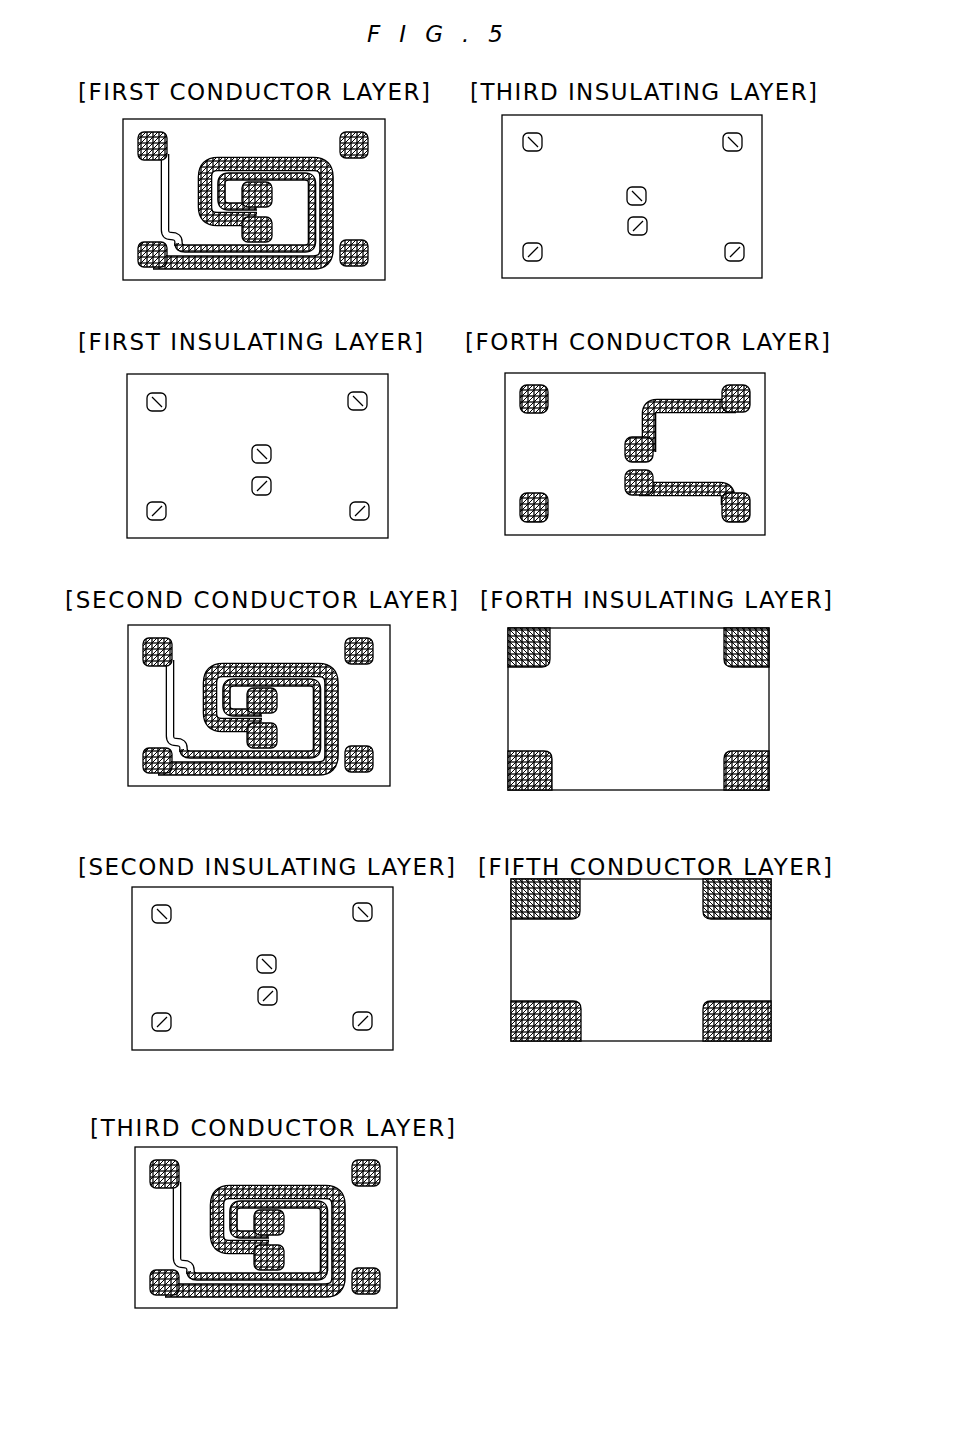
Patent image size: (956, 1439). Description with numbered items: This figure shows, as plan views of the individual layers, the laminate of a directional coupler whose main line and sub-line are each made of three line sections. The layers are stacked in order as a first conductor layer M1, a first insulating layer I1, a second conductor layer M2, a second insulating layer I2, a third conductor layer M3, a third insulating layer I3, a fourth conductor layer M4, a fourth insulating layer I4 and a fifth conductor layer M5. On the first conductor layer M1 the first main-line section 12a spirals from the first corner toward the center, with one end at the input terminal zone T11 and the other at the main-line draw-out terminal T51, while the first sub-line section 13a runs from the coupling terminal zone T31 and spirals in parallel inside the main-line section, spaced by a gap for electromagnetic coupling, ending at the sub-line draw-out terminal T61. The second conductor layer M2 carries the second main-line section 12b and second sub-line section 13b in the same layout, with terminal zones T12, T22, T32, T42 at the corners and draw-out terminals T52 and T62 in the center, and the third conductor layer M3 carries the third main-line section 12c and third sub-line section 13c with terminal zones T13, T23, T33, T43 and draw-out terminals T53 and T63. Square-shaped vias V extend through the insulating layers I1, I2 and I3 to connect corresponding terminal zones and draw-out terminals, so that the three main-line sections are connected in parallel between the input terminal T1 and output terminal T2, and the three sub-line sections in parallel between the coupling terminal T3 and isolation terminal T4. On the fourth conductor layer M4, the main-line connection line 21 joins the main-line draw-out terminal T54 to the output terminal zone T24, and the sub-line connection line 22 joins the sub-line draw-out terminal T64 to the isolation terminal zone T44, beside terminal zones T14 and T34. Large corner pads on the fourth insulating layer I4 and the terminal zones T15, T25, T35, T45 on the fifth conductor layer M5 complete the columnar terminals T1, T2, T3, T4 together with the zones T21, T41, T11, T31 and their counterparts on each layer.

The first main-line section 12a is at (240, 241).
The second main-line section 12b is at (245, 748).
The third main-line section 12c is at (252, 1270).
The first sub-line section 13a is at (142, 202).
The second sub-line section 13b is at (149, 708).
The third sub-line section 13c is at (155, 1230).
The main-line connection line 21 is at (690, 484).
The sub-line connection line 22 is at (682, 411).
The first conductor layer M1 is at (270, 101).
The second conductor layer M2 is at (285, 705).
The third conductor layer M3 is at (289, 1227).
The fourth conductor layer M4 is at (503, 448).
The fifth conductor layer M5 is at (500, 956).
The first insulating layer I1 is at (400, 473).
The second insulating layer I2 is at (405, 1008).
The third insulating layer I3 is at (490, 186).
The fourth insulating layer I4 is at (493, 713).
The via V is at (523, 141).
The columnar input terminal T1 is at (526, 790).
The columnar output terminal T2 is at (750, 787).
The columnar coupling terminal T3 is at (508, 661).
The columnar isolation terminal T4 is at (757, 647).
The input terminal zone T11 is at (140, 278).
The input terminal zone T12 is at (147, 785).
The input terminal zone T13 is at (153, 1306).
The input terminal zone T14 is at (530, 522).
The first terminal electrode (fifth layer) T15 is at (534, 1041).
The output terminal zone T21 is at (382, 277).
The output terminal zone T22 is at (388, 784).
The output terminal zone T23 is at (397, 1305).
The output terminal zone T24 is at (745, 520).
The second terminal electrode (fifth layer) T25 is at (739, 1036).
The coupling terminal zone T31 is at (97, 138).
The coupling terminal zone T32 is at (104, 645).
The coupling terminal zone T33 is at (105, 1167).
The coupling terminal zone T34 is at (520, 390).
The third terminal electrode (fifth layer) T35 is at (532, 898).
The isolation terminal zone T41 is at (400, 134).
The isolation terminal zone T42 is at (411, 641).
The isolation terminal zone T43 is at (411, 1168).
The isolation terminal zone T44 is at (750, 390).
The fourth terminal electrode (fifth layer) T45 is at (751, 902).
The main-line draw-out terminal T51 is at (268, 265).
The main-line draw-out terminal T52 is at (274, 771).
The main-line draw-out terminal T53 is at (280, 1293).
The fifth connection pad (fourth layer) T54 is at (640, 495).
The sub-line draw-out terminal T61 is at (267, 166).
The sub-line draw-out terminal T62 is at (268, 673).
The sub-line draw-out terminal T63 is at (275, 1194).
The sixth connection pad (fourth layer) T64 is at (627, 447).